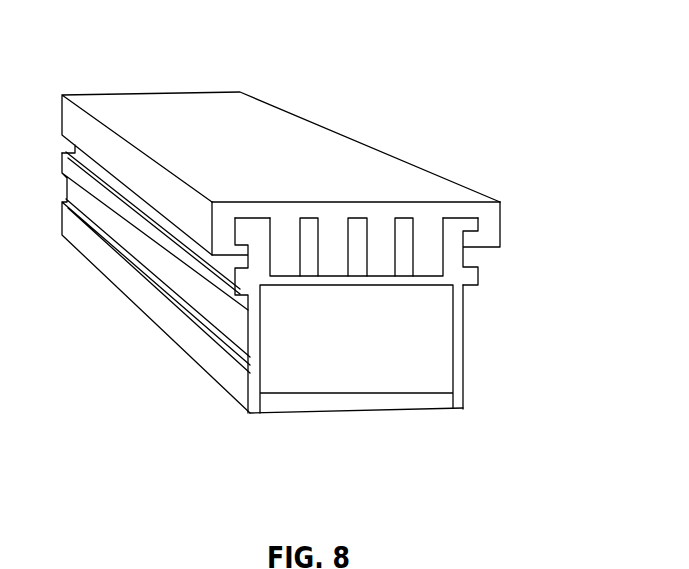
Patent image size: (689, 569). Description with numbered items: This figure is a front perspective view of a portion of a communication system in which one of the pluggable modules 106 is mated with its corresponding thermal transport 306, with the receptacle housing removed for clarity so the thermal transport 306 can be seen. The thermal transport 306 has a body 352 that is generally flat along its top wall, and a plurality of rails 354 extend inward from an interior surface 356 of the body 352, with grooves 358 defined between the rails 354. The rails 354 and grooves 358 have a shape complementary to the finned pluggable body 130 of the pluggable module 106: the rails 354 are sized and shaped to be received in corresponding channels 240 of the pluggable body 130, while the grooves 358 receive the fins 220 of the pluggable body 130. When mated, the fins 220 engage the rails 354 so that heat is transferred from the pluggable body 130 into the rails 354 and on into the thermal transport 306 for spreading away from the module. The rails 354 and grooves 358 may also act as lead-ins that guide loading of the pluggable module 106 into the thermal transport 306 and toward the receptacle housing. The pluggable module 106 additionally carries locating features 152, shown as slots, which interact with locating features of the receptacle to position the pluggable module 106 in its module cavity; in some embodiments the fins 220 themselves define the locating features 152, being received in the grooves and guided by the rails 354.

The thermal transport 306 is at (204, 110).
The locating features 152 is at (224, 348).
The body 352 is at (328, 158).
The rails 354 is at (243, 248).
The interior surface 356 is at (368, 218).
The grooves 358 is at (312, 229).
The fins 220 is at (403, 233).
The pluggable body 130 is at (340, 400).
The pluggable module 106 is at (397, 413).
The channels 240 is at (393, 285).